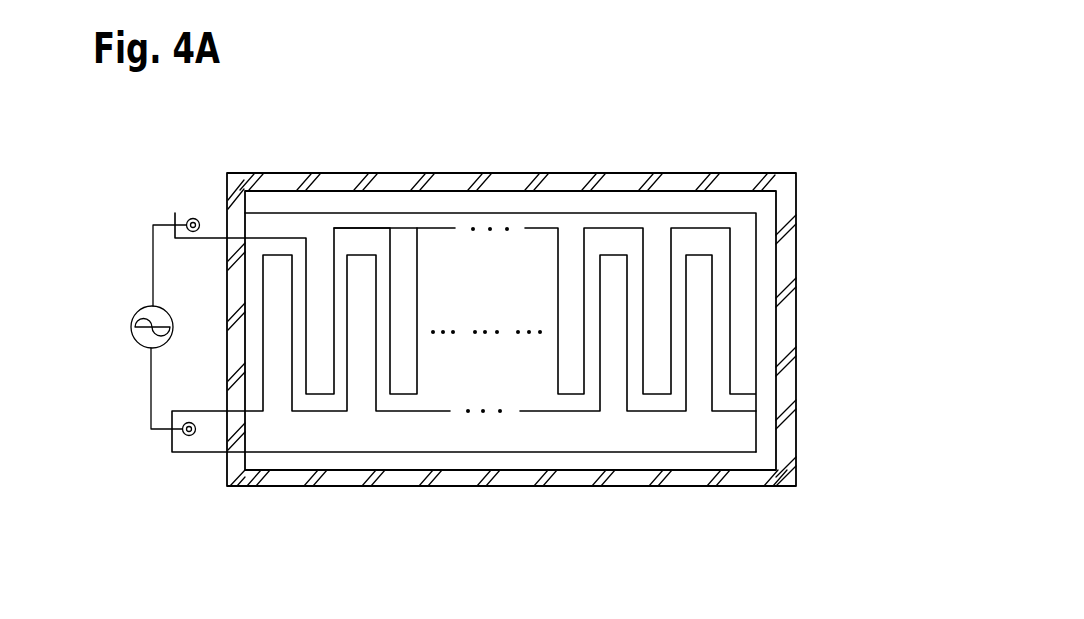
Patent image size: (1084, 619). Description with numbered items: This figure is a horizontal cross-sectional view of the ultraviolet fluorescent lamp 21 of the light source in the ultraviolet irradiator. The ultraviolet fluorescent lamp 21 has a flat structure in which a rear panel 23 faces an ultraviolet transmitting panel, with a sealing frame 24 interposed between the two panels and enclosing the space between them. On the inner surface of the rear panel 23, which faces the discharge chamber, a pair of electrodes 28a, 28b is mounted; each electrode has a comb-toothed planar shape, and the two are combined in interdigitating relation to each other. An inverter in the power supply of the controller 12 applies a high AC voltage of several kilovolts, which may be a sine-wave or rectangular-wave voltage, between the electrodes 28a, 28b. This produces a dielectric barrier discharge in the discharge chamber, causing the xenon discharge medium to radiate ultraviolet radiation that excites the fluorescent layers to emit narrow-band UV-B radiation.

The ultraviolet fluorescent lamp 21 is at (813, 227).
The rear panel 23 is at (715, 460).
The sealing frame 24 is at (568, 186).
The electrode 28a is at (358, 396).
The electrode 28b is at (405, 238).
The controller 12 is at (136, 346).